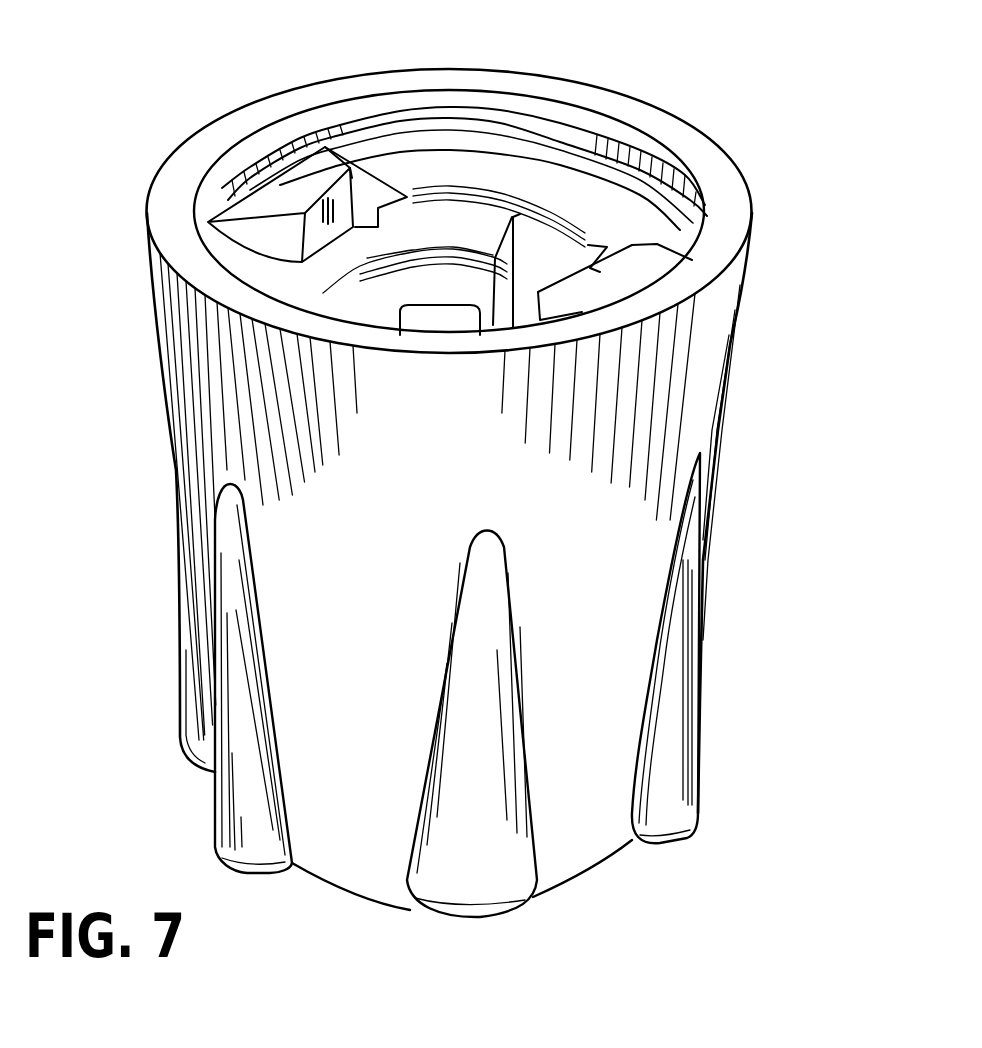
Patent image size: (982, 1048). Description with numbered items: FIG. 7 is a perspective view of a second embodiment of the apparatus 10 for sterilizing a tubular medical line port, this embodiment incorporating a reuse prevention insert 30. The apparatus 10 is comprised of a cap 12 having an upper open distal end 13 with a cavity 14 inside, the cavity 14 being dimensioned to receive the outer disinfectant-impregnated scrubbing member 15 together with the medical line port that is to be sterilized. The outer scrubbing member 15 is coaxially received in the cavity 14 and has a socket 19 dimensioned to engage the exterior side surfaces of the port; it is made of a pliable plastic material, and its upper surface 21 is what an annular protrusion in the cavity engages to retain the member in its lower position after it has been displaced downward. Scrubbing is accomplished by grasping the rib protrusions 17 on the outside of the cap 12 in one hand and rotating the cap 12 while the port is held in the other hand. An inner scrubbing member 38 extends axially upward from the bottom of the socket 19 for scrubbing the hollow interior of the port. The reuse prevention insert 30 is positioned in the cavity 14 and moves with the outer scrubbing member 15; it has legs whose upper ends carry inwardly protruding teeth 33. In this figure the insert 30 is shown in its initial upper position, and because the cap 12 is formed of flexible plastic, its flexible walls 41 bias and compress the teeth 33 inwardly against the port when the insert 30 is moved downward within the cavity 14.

The apparatus 10 is at (793, 110).
The cap 12 is at (718, 440).
The upper open distal end 13 is at (165, 227).
The cavity 14 is at (290, 157).
The outer disinfectant-impregnated scrubbing member 15 is at (235, 303).
The rib protrusions 17 is at (697, 780).
The socket 19 is at (265, 320).
The upper surface 21 is at (645, 187).
The reuse prevention insert 30 is at (268, 190).
The inwardly protruding teeth 33 is at (407, 193).
The inner scrubbing member 38 is at (447, 317).
The flexible walls 41 is at (180, 700).